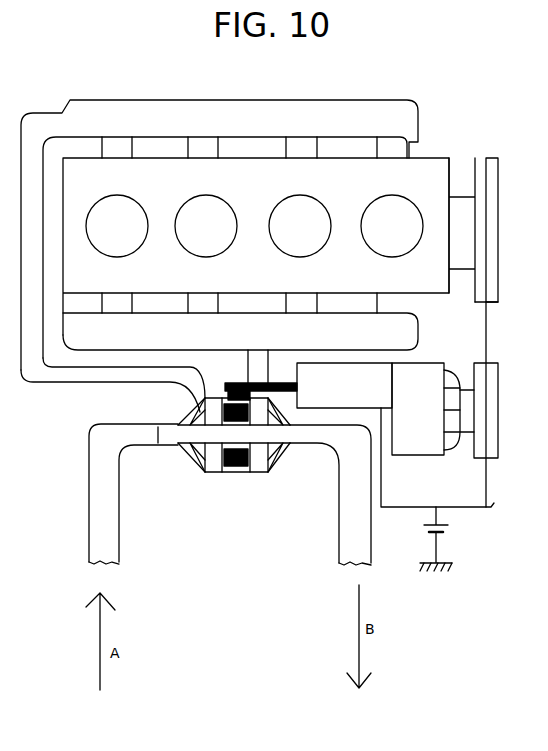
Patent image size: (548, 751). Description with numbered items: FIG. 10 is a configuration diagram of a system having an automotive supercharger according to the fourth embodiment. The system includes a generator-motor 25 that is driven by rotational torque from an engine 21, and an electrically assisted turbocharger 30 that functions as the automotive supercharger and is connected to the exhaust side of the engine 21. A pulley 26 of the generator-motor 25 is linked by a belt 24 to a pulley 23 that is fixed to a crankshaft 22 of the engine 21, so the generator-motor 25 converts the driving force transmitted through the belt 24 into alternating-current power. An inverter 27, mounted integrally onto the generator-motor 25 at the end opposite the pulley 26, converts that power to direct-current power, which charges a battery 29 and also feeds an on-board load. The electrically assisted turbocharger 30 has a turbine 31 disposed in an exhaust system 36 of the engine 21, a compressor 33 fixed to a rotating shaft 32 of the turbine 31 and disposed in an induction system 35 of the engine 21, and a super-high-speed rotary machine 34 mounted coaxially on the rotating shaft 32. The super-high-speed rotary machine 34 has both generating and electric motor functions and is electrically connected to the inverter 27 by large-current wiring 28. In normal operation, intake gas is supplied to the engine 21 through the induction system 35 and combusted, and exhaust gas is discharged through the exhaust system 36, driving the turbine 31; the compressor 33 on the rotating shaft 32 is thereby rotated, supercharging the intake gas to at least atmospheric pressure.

The engine 21 is at (427, 146).
The crankshaft 22 is at (464, 198).
The pulley 23 is at (499, 164).
The belt 24 is at (489, 331).
The generator-motor 25 is at (440, 362).
The pulley 26 is at (498, 373).
The inverter 27 is at (374, 376).
The large-current wiring 28 is at (240, 382).
The battery 29 is at (447, 533).
The electrically assisted turbocharger 30 is at (225, 460).
The turbine 31 is at (265, 474).
The rotating shaft 32 is at (275, 456).
The compressor 33 is at (187, 456).
The super-high-speed rotary machine 34 is at (235, 482).
The induction system 35 is at (100, 420).
The exhaust system 36 is at (340, 466).